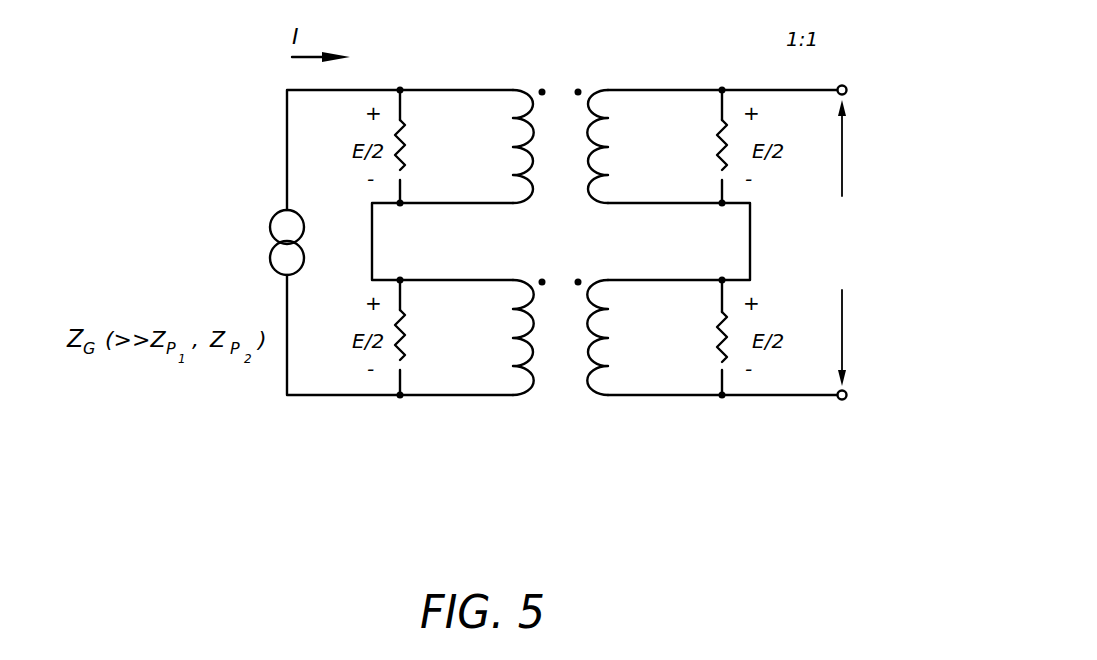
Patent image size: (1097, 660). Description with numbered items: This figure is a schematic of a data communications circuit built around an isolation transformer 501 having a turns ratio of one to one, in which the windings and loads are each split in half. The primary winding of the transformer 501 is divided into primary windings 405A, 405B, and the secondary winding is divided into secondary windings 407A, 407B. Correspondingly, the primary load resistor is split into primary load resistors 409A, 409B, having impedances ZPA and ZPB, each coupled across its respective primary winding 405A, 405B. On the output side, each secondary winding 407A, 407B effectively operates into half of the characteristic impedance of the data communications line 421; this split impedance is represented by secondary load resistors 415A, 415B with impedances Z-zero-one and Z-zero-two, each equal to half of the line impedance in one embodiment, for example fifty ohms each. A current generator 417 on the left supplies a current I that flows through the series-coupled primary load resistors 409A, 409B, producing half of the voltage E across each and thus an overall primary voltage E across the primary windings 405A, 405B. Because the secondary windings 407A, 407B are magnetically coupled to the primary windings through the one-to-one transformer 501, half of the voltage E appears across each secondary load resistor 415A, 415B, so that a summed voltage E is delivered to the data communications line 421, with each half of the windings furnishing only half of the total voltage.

The primary winding 405A is at (480, 204).
The primary winding 405B is at (513, 398).
The secondary winding 407A is at (642, 205).
The secondary winding 407B is at (600, 398).
The primary load resistor 409A is at (403, 135).
The primary load resistor 409B is at (403, 325).
The secondary load resistor 415A is at (720, 137).
The secondary load resistor 415B is at (720, 328).
The current generator 417 is at (269, 259).
The data communications line 421 is at (902, 108).
The transformer 501 is at (558, 423).